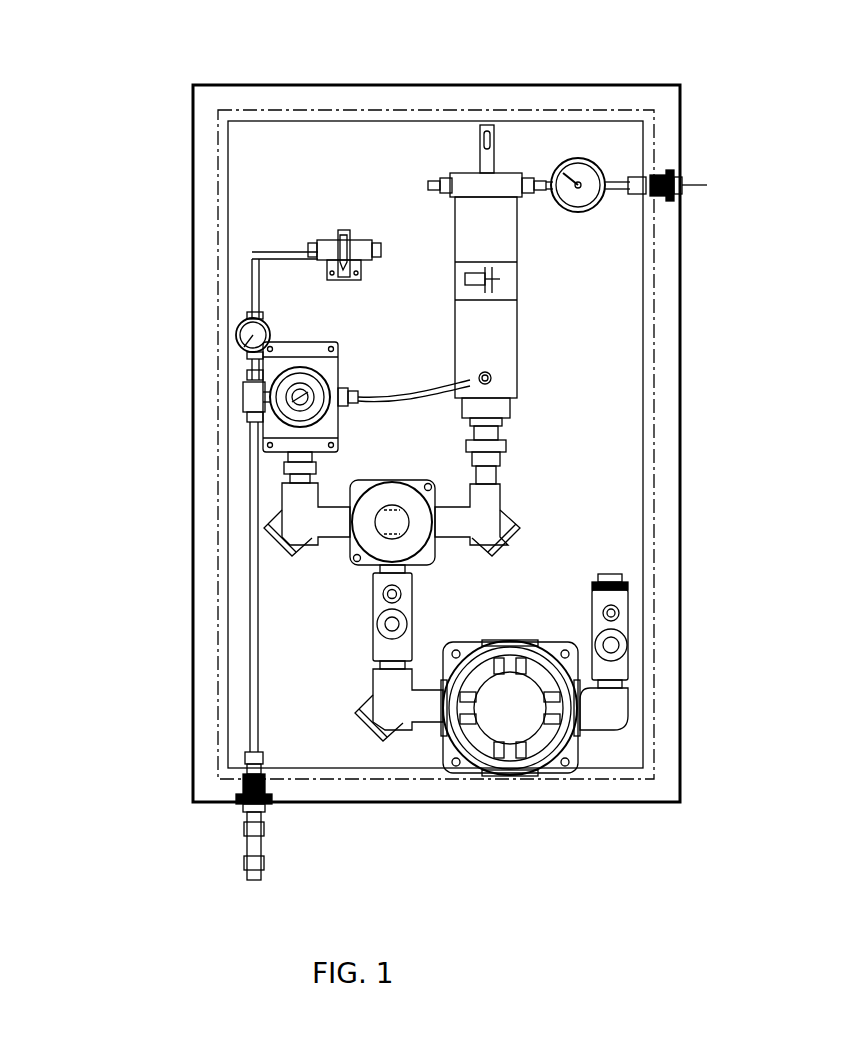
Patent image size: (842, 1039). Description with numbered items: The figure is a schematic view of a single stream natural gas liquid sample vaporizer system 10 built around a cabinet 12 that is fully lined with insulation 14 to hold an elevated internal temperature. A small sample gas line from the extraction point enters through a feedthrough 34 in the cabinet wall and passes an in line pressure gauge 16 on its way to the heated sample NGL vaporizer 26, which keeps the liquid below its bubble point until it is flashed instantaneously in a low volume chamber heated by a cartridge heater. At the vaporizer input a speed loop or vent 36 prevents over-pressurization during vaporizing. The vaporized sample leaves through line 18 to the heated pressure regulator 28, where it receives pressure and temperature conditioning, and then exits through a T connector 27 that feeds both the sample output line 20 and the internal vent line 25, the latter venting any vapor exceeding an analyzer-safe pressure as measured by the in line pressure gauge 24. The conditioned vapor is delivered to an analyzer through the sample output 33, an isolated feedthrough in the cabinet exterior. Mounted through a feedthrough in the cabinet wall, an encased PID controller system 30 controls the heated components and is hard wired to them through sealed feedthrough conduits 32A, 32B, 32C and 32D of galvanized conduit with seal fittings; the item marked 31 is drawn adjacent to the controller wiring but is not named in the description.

The natural gas liquid sample vaporizer system 10 is at (442, 172).
The cabinet 12 is at (228, 140).
The insulation 14 is at (218, 177).
The in line pressure gauge 16 is at (602, 165).
The line 18 is at (430, 375).
The sample output line 20 is at (246, 708).
The in line pressure gauge 24 is at (243, 330).
The internal vent line 25 is at (306, 250).
The sample NGL vaporizer 26 is at (522, 318).
The T connector 27 is at (242, 395).
The heated pressure regulator 28 is at (268, 408).
The PID controller system 30 is at (553, 702).
The valve 31 is at (628, 642).
The sealed feedthrough conduit 32A is at (512, 433).
The sealed feedthrough conduit 32B is at (275, 540).
The sealed feedthrough conduit 32C is at (370, 628).
The sealed feedthrough conduit 32D is at (620, 577).
The sample output 33 is at (240, 812).
The feedthrough 34 is at (676, 185).
The speed loop or vent 36 is at (488, 124).